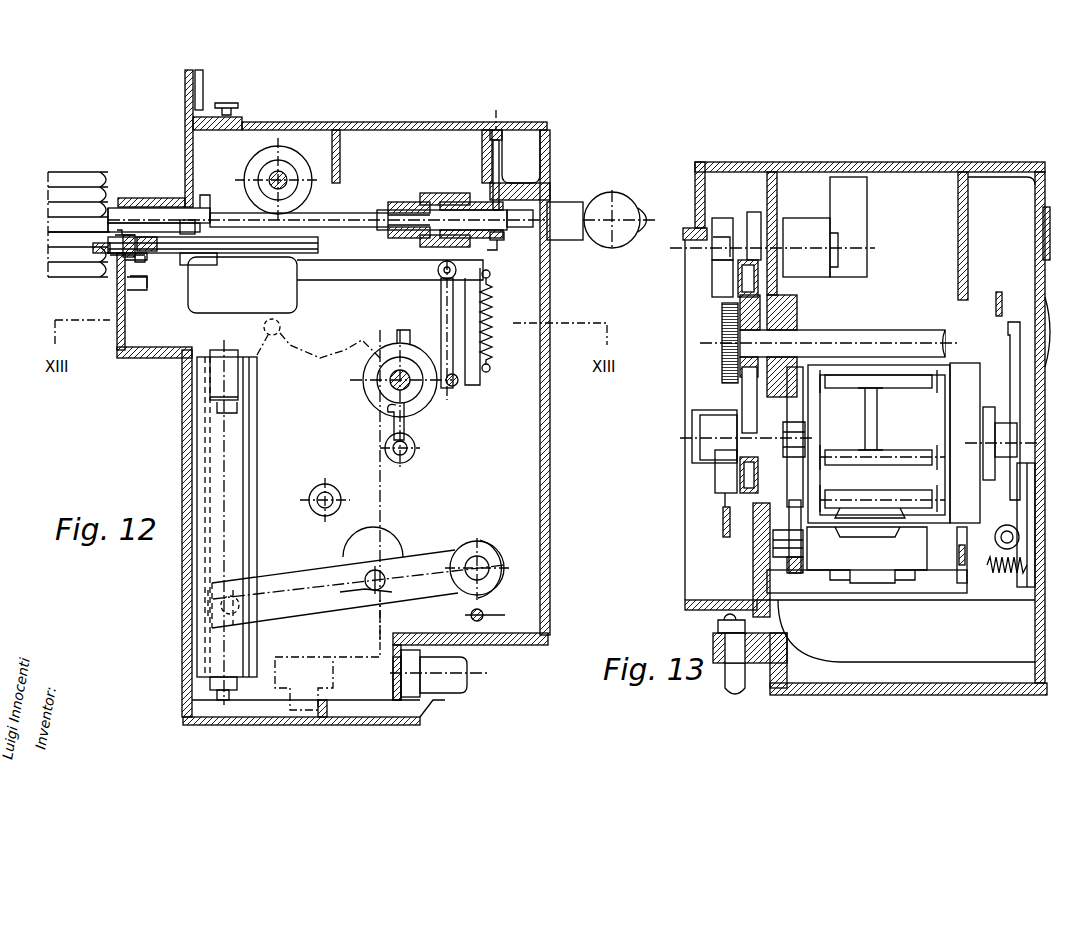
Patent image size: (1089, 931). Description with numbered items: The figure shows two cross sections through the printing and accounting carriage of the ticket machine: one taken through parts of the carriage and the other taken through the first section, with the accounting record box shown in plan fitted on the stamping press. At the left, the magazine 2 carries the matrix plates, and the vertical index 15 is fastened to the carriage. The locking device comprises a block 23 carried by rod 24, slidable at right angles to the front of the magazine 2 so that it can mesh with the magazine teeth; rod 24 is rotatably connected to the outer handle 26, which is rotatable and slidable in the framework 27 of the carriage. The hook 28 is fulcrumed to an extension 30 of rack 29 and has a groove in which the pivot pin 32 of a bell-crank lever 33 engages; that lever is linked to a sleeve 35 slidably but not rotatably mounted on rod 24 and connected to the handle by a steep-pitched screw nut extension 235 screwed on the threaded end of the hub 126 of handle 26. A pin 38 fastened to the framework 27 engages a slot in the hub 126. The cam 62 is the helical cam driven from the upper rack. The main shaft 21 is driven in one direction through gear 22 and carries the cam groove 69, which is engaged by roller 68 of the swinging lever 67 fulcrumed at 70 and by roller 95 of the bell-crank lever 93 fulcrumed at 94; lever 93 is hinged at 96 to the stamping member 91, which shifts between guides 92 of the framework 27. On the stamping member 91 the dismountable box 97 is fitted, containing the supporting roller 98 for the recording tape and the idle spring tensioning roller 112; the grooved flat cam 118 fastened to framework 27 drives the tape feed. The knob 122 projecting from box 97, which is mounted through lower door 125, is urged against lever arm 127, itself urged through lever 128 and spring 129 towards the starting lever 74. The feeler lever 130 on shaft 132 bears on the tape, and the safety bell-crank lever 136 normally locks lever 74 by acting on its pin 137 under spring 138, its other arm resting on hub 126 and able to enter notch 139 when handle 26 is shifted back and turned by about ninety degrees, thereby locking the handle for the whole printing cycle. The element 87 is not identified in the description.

In FIG. 12, the magazine 2 is at (70, 170).
In FIG. 12, the vertical index 15 is at (200, 92).
In FIG. 12, the cam 62 is at (290, 150).
In FIG. 12, the pivot pin 32 is at (110, 228).
In FIG. 12, the block 23 is at (127, 206).
In FIG. 12, the bell-crank lever 33 is at (153, 225).
In FIG. 12, the hook 28 is at (100, 245).
In FIG. 12, the extension 30 is at (197, 258).
In FIG. 12, the rack 29 is at (270, 250).
In FIG. 12, the rod 24 is at (343, 215).
In FIG. 12, the sleeve 35 is at (398, 200).
In FIG. 12, the screw nut extension 235 is at (445, 195).
In FIG. 12, the pin 38 is at (500, 168).
In FIG. 12, the framework 27 is at (550, 172).
In FIG. 13, the framework 27 is at (925, 166).
In FIG. 12, the handle 26 is at (622, 195).
In FIG. 12, the hub 126 is at (563, 230).
In FIG. 12, the notch 139 is at (497, 240).
In FIG. 12, the bell-crank lever 136 is at (445, 322).
In FIG. 12, the roller 98 is at (283, 327).
In FIG. 13, the roller 98 is at (888, 505).
In FIG. 12, the spring 138 is at (495, 350).
In FIG. 12, the pin 137 is at (458, 383).
In FIG. 12, the main shaft 21 is at (405, 386).
In FIG. 13, the main shaft 21 is at (893, 330).
In FIG. 12, the feeler lever 130 is at (398, 432).
In FIG. 12, the shaft 132 is at (416, 448).
In FIG. 12, the stamping member 91 is at (218, 450).
In FIG. 13, the stamping member 91 is at (875, 560).
In FIG. 12, the fulcrum 70 is at (311, 495).
In FIG. 13, the fulcrum 70 is at (705, 432).
In FIG. 12, the box 97 is at (382, 488).
In FIG. 13, the box 97 is at (858, 380).
In FIG. 12, the bell-crank lever 93 is at (293, 575).
In FIG. 13, the bell-crank lever 93 is at (795, 490).
In FIG. 12, the fulcrum 94 is at (480, 565).
In FIG. 13, the fulcrum 94 is at (805, 226).
In FIG. 12, the hinge 96 is at (205, 605).
In FIG. 13, the hinge 96 is at (795, 565).
In FIG. 12, the screw 87 is at (495, 603).
In FIG. 12, the lower door 125 is at (185, 712).
In FIG. 13, the roller 95 is at (740, 287).
In FIG. 13, the gear 22 is at (722, 325).
In FIG. 13, the cam groove 69 is at (745, 395).
In FIG. 13, the roller 68 is at (737, 468).
In FIG. 13, the swinging lever 67 is at (720, 527).
In FIG. 13, the spring tensioning roller 112 is at (887, 460).
In FIG. 13, the knob 122 is at (1000, 440).
In FIG. 13, the lever arm 127 is at (1017, 368).
In FIG. 13, the starting lever 74 is at (1000, 290).
In FIG. 13, the guides 92 is at (915, 582).
In FIG. 13, the spring 129 is at (995, 567).
In FIG. 13, the lever 128 is at (1025, 562).
In FIG. 13, the grooved flat cam 118 is at (960, 585).